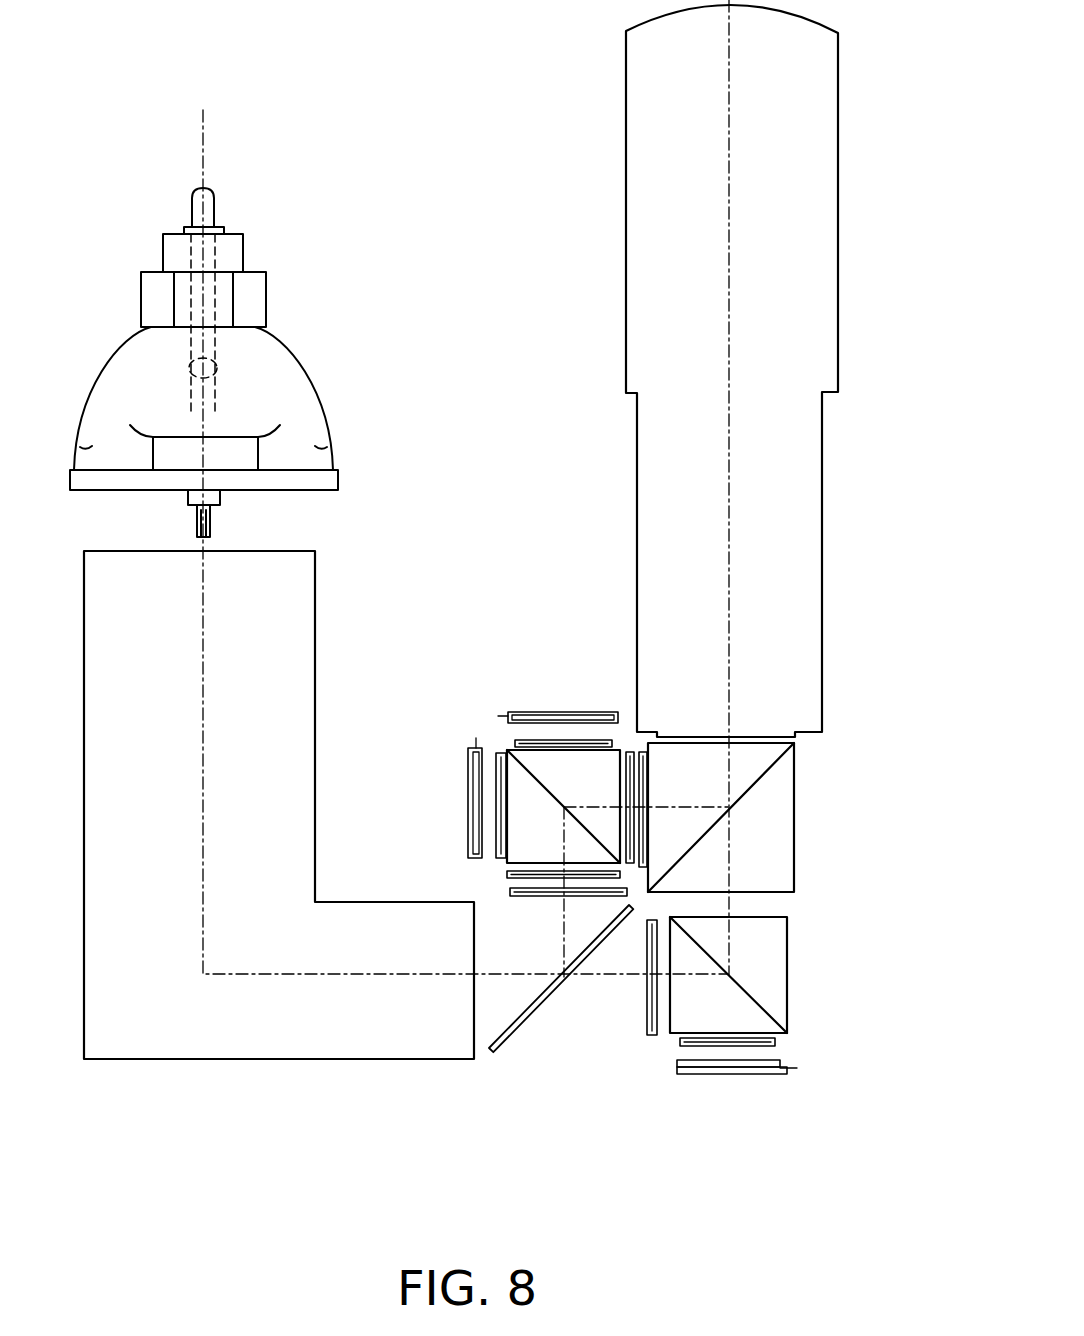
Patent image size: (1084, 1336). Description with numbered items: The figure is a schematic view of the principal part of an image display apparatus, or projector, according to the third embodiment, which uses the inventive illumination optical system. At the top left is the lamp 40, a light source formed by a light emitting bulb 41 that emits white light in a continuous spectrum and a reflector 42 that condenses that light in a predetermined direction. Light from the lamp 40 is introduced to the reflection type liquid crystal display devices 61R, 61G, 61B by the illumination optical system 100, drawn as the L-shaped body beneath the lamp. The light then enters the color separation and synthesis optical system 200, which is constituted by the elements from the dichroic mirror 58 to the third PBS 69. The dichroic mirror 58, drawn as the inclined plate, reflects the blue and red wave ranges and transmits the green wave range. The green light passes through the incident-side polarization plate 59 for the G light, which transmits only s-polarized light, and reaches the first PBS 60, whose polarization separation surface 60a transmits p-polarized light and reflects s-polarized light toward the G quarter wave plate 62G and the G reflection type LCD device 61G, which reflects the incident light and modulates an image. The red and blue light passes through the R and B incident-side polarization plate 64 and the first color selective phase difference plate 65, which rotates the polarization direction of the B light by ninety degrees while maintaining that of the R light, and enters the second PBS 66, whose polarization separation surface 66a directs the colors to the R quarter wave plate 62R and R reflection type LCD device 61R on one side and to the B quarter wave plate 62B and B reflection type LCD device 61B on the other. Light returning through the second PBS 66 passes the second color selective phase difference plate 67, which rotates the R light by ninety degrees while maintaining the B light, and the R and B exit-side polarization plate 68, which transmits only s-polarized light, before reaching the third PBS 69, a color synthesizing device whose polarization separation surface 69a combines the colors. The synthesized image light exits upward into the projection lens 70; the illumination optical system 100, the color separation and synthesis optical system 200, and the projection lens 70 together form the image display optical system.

The lamp 40 is at (223, 362).
The light emitting bulb 41 is at (193, 374).
The reflector 42 is at (321, 414).
The illumination optical system 100 is at (347, 626).
The projection lens 70 is at (838, 52).
The second PBS 66 is at (522, 716).
The polarization separation surface 66a is at (530, 772).
The R reflection type liquid crystal display device 61R is at (468, 783).
The R 1/4 wave plate 62R is at (500, 753).
The B reflection type liquid crystal display device 61B is at (557, 713).
The B 1/4 wave plate 62B is at (517, 742).
The R and B incident-side polarization plate 64 is at (510, 892).
The first color selective phase difference plate 65 is at (507, 875).
The second color selective phase difference plate 67 is at (628, 752).
The R and B exit-side polarization plate 68 is at (643, 752).
The color separation and synthesis optical system 200 is at (725, 941).
The third PBS 69 is at (779, 817).
The polarization separation surface 69a is at (777, 763).
The first PBS 60 is at (781, 975).
The polarization separation surface 60a is at (767, 1014).
The incident-side polarization plate for the G light 59 is at (650, 1035).
The G 1/4 wave plate 62G is at (777, 1042).
The G reflection type liquid crystal display device 61G is at (735, 1074).
The dichroic mirror 58 is at (502, 1040).